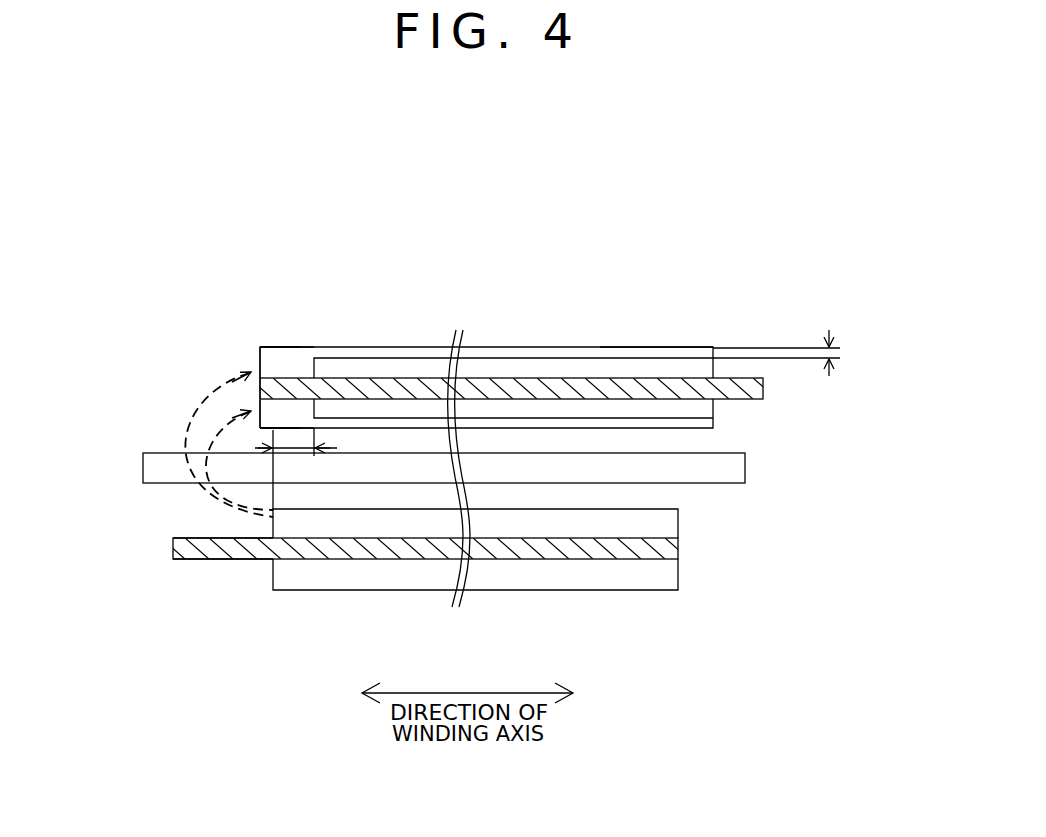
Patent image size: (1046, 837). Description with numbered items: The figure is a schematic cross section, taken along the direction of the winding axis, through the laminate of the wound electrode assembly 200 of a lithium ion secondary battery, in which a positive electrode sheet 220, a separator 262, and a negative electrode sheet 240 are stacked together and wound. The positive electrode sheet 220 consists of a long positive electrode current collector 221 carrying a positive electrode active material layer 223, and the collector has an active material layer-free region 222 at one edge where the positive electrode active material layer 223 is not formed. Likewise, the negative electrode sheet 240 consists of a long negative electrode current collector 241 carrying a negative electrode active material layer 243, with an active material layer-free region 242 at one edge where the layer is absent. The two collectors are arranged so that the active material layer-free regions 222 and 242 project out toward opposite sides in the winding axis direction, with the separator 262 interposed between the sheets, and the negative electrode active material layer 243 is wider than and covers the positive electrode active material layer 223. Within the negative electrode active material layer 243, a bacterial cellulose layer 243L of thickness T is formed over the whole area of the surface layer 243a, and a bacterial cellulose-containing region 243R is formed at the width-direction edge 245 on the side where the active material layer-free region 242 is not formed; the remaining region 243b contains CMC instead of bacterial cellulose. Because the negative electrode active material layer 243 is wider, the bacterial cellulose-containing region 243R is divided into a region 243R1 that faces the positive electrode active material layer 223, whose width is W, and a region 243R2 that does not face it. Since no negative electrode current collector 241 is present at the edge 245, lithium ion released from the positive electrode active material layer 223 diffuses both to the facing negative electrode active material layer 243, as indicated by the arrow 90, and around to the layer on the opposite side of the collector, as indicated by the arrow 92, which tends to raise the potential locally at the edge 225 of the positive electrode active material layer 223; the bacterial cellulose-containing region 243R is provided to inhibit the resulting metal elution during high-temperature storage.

The wound electrode assembly 200 is at (699, 214).
The positive electrode sheet 220 is at (688, 633).
The positive electrode current collector 221 is at (194, 559).
The active material layer-free region 222 is at (234, 559).
The positive electrode active material layer 223 is at (653, 507).
The edge of the positive electrode active material layer 225 is at (272, 539).
The negative electrode sheet 240 is at (714, 292).
The negative electrode current collector 241 is at (742, 383).
The active material layer-free region 242 is at (735, 377).
The negative electrode active material layer 243 is at (577, 344).
The surface layer 243a is at (275, 346).
The region outside the bacterial cellulose regions 243b is at (392, 407).
The bacterial cellulose-containing region 243R is at (290, 345).
The bacterial cellulose layer 243L is at (642, 344).
The region facing the positive electrode active material layer 243R1 is at (297, 430).
The region not facing the positive electrode active material layer 243R2 is at (262, 436).
The edge of the negative electrode active material layer 245 is at (258, 357).
The separator 262 is at (747, 468).
The arrow 90 is at (220, 387).
The arrow 92 is at (228, 420).
The width W is at (306, 448).
The thickness T is at (835, 352).